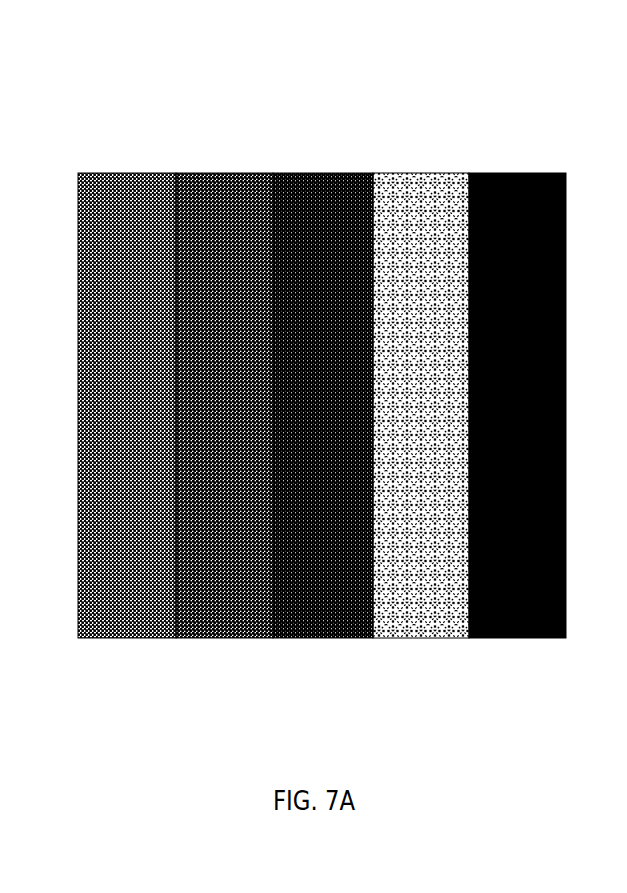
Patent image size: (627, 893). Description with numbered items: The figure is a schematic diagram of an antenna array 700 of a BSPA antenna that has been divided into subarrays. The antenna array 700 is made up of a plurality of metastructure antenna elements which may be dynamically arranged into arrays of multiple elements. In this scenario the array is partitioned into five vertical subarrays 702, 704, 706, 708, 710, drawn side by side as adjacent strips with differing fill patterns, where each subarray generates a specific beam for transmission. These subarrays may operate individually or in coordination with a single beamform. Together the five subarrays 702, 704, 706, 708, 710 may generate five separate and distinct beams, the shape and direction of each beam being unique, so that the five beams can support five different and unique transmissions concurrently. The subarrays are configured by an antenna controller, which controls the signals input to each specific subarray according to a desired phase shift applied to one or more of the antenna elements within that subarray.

The antenna array 700 is at (324, 323).
The subarray 702 is at (117, 167).
The subarray 704 is at (207, 167).
The subarray 706 is at (312, 167).
The subarray 708 is at (400, 167).
The subarray 710 is at (510, 167).